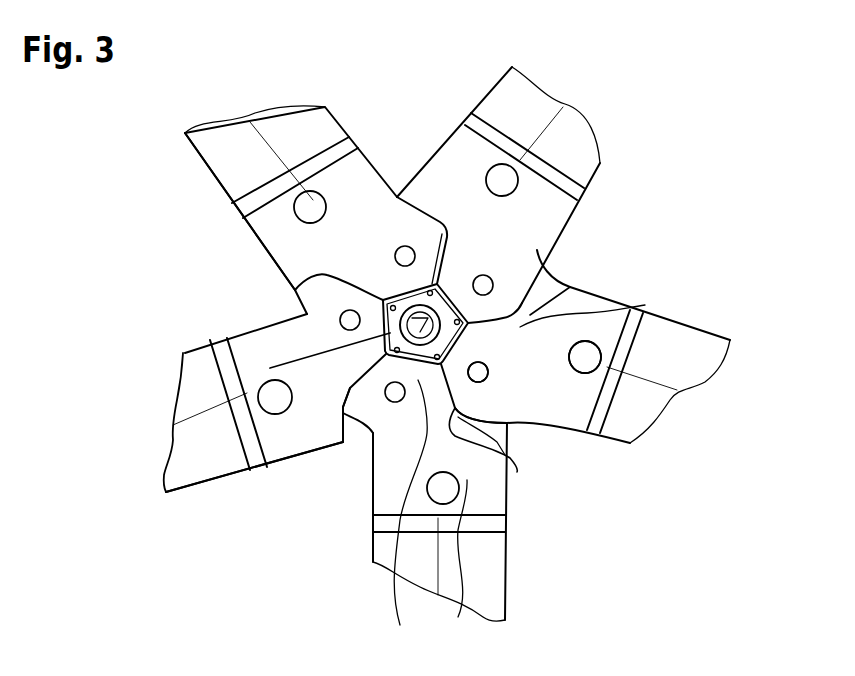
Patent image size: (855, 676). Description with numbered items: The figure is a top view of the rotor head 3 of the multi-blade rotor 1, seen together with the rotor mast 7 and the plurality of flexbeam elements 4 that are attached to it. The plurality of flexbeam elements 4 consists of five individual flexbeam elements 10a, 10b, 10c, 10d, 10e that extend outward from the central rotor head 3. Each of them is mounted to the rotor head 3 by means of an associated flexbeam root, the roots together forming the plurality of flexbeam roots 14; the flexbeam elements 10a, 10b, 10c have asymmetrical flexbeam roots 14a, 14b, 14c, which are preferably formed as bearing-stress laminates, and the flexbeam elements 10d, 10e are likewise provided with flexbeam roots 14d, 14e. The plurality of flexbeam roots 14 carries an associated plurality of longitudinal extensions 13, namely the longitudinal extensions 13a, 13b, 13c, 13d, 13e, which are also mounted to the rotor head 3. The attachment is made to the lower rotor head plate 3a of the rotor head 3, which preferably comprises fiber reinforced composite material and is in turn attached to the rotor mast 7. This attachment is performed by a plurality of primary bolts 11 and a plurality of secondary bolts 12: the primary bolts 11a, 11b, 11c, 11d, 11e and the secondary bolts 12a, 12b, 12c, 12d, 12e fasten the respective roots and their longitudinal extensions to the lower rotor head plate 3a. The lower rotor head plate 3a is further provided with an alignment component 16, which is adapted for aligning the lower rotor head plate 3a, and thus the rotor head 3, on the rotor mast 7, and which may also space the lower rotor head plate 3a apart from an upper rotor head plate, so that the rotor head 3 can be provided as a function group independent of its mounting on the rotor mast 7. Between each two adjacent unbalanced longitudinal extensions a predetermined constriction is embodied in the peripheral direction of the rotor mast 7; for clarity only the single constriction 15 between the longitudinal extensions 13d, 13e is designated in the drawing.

The multi-blade rotor 1 is at (126, 133).
The rotor head 3 is at (566, 260).
The lower rotor head plate 3a is at (554, 283).
The plurality of flexbeam elements 4 is at (712, 196).
The rotor mast 7 is at (270, 368).
The flexbeam element 10a is at (227, 147).
The flexbeam element 10b is at (573, 143).
The flexbeam element 10c is at (666, 372).
The flexbeam element 10d is at (478, 552).
The flexbeam element 10e is at (185, 458).
The plurality of primary bolts 11 is at (610, 360).
The primary bolt 11a is at (310, 205).
The primary bolt 11b is at (500, 178).
The primary bolt 11c is at (588, 355).
The primary bolt 11d is at (445, 488).
The primary bolt 11e is at (270, 400).
The plurality of secondary bolts 12 is at (464, 388).
The secondary bolt 12a is at (403, 254).
The secondary bolt 12b is at (484, 280).
The secondary bolt 12c is at (488, 373).
The secondary bolt 12d is at (391, 402).
The secondary bolt 12e is at (340, 320).
The plurality of longitudinal extensions 13 is at (333, 297).
The longitudinal extension 13a is at (381, 258).
The longitudinal extension 13b is at (510, 267).
The longitudinal extension 13c is at (605, 318).
The longitudinal extension 13d is at (440, 516).
The longitudinal extension 13e is at (292, 288).
The plurality of flexbeam roots 14 is at (303, 465).
The asymmetrical flexbeam root 14a is at (283, 194).
The asymmetrical flexbeam root 14b is at (487, 150).
The asymmetrical flexbeam root 14c is at (583, 393).
The flexbeam root 14d is at (439, 566).
The flexbeam root 14e is at (243, 355).
The constriction 15 is at (357, 392).
The alignment component 16 is at (522, 411).